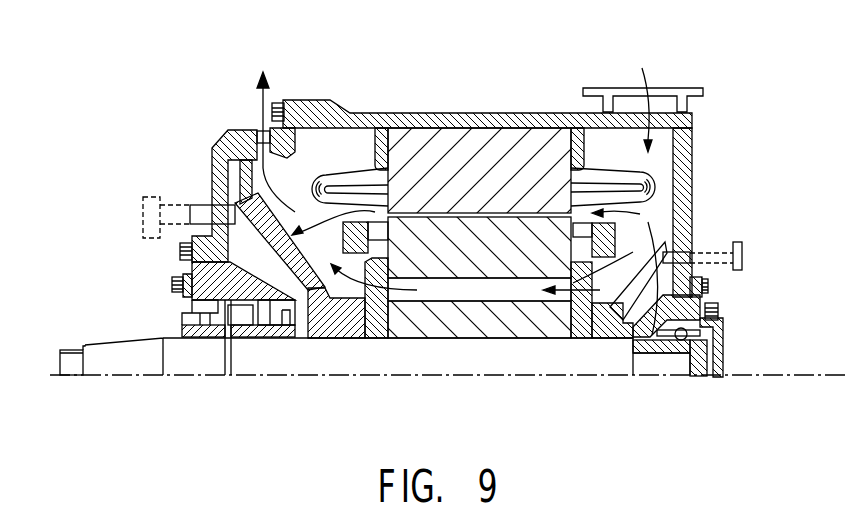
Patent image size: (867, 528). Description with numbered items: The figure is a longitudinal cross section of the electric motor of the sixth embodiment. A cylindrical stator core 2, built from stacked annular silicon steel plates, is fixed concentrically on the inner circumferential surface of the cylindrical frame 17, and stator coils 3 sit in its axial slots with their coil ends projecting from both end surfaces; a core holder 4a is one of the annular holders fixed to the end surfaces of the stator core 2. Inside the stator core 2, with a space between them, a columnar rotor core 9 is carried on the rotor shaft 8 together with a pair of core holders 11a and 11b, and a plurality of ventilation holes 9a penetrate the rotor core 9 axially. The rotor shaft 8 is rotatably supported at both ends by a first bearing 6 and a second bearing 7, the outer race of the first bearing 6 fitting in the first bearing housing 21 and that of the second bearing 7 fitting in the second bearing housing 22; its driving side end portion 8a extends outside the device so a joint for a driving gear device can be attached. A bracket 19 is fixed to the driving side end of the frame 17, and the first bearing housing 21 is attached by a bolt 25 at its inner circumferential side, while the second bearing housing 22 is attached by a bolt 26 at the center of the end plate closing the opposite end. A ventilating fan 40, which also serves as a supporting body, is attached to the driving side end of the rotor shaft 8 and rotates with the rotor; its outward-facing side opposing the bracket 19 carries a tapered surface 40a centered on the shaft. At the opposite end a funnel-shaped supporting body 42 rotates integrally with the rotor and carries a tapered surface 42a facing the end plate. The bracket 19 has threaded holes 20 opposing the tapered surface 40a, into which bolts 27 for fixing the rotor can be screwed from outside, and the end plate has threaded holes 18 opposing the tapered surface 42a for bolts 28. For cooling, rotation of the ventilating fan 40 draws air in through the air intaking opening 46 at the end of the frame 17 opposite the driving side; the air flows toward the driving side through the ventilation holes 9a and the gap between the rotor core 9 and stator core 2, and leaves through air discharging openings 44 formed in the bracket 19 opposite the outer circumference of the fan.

The stator core 2 is at (468, 135).
The stator coils 3 is at (356, 176).
The core holder 4a is at (382, 128).
The first bearing 6 is at (244, 330).
The second bearing 7 is at (679, 352).
The rotor shaft 8 is at (425, 376).
The driving side end portion 8a is at (117, 376).
The rotor core 9 is at (528, 332).
The ventilation holes 9a is at (470, 302).
The core holder 11a is at (372, 340).
The core holder 11b is at (588, 340).
The frame 17 is at (518, 120).
The threaded holes for fixing 18 is at (692, 233).
The bracket 19 is at (223, 148).
The threaded holes for fixing 20 is at (210, 198).
The first bearing housing 21 is at (172, 285).
The second bearing housing 22 is at (719, 305).
The bolt 25 is at (180, 252).
The bolt 26 is at (709, 283).
The bolts for fixing the rotor 27 is at (143, 204).
The bolts for fixing the rotor 28 is at (744, 247).
The ventilating fan 40 is at (308, 288).
The tapered surface 40a is at (226, 340).
The supporting body 42 is at (648, 224).
The tapered surface 42a is at (636, 330).
The air discharging openings 44 is at (258, 135).
The air intaking opening 46 is at (671, 90).